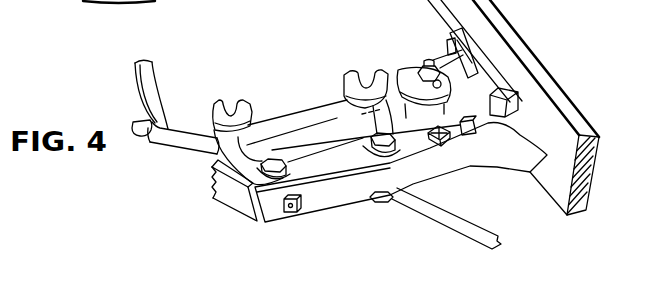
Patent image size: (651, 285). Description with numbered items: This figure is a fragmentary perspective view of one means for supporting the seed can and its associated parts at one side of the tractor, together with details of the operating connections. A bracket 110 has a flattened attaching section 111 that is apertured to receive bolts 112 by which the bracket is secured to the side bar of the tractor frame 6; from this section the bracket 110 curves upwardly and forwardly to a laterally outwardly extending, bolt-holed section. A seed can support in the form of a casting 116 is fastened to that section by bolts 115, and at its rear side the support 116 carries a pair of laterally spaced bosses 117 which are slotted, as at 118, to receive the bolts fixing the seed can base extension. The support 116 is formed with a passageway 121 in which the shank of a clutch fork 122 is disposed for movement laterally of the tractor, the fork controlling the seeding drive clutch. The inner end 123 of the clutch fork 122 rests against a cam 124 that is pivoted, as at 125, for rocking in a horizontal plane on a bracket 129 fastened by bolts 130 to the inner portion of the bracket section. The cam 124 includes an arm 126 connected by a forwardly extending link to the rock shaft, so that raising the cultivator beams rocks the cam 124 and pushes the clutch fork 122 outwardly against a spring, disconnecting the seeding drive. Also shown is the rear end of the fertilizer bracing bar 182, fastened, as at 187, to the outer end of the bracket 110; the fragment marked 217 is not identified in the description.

The frame 6 is at (527, 57).
The bracket 110 is at (477, 166).
The flattened attaching section 111 is at (490, 72).
The bolts 112 is at (447, 43).
The bolts 115 is at (272, 150).
The seed can support 116 is at (286, 108).
The bosses 117 is at (212, 118).
The slots 118 is at (228, 101).
The passageway 121 is at (212, 150).
The clutch fork 122 is at (170, 152).
The inner end 123 is at (347, 102).
The cam 124 is at (397, 73).
The pivot 125 is at (425, 65).
The arm 126 is at (475, 32).
The bracket 129 is at (422, 123).
The bolts 130 is at (450, 134).
The bracing bar 182 is at (220, 191).
The fastening 187 is at (293, 213).
The element 217 is at (96, 4).